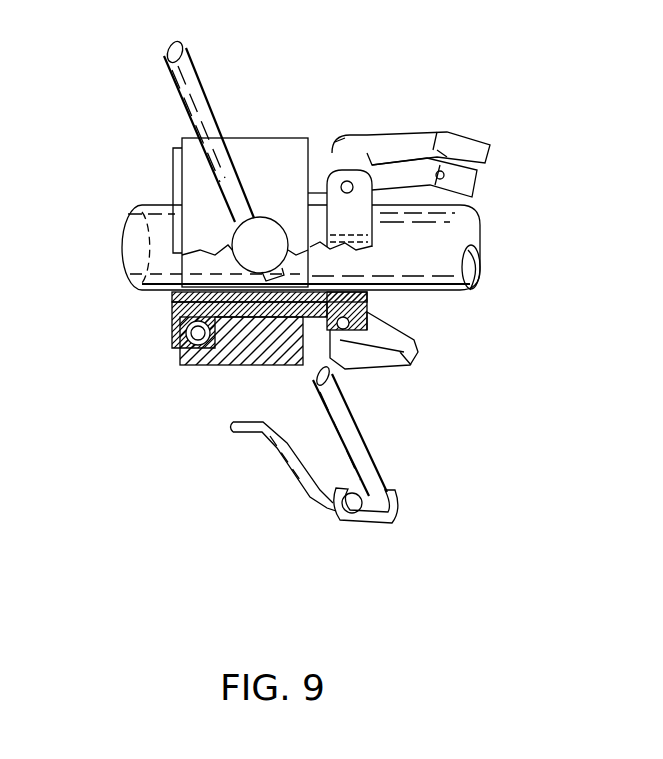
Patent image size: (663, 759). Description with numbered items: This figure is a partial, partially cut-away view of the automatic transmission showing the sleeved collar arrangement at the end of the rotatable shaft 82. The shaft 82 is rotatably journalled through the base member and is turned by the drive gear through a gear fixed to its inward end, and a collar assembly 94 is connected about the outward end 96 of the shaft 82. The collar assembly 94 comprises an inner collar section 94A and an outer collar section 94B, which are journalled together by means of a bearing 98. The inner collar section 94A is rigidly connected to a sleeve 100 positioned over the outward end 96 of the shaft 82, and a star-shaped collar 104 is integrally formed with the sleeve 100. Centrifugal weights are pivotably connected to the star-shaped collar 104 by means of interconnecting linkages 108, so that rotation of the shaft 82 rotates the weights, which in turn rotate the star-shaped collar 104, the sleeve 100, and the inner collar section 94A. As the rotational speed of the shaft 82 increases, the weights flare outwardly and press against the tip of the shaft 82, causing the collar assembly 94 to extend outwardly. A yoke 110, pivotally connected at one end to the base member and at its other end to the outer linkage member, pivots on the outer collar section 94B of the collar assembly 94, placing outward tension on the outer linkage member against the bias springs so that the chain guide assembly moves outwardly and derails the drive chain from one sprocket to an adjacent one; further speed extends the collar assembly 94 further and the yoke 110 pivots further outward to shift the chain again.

The rotatable shaft 82 is at (460, 230).
The collar assembly 94 is at (245, 145).
The inner collar section 94A is at (168, 325).
The outer collar section 94B is at (193, 357).
The outward end 96 is at (448, 291).
The bearing 98 is at (183, 345).
The sleeve 100 is at (173, 297).
The star-shaped collar 104 is at (353, 237).
The interconnecting linkages 108 is at (468, 137).
The yoke 110 is at (180, 77).